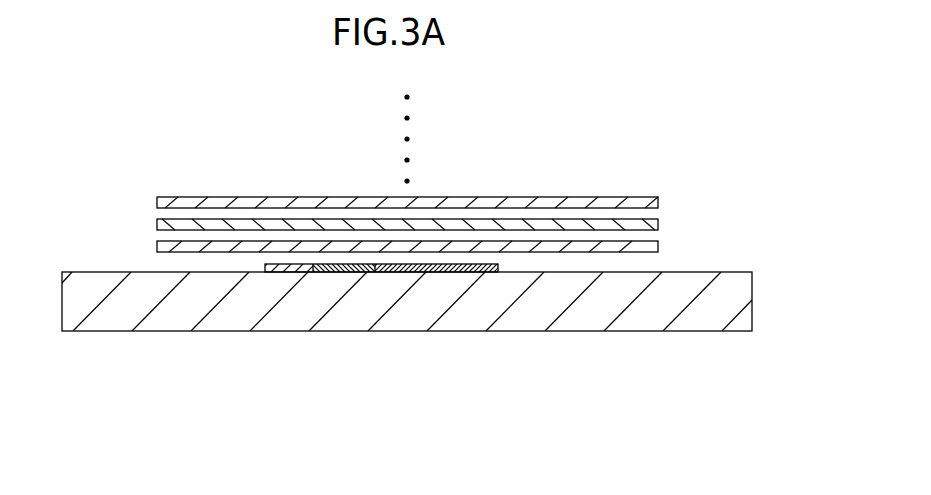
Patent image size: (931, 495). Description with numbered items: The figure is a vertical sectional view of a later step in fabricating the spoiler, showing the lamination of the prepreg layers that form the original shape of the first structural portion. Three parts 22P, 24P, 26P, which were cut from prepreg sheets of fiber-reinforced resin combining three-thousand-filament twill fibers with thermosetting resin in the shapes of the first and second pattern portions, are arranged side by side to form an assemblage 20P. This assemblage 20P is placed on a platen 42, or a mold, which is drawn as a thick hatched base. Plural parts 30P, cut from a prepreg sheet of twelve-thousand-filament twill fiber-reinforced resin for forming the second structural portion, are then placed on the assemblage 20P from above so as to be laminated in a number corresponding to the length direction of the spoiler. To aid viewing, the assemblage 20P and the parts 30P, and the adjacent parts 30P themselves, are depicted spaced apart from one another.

The parts 30P is at (658, 247).
The platen 42 is at (643, 332).
The assemblage 20P is at (507, 266).
The part 24P is at (292, 273).
The part 22P is at (345, 273).
The part 26P is at (435, 273).